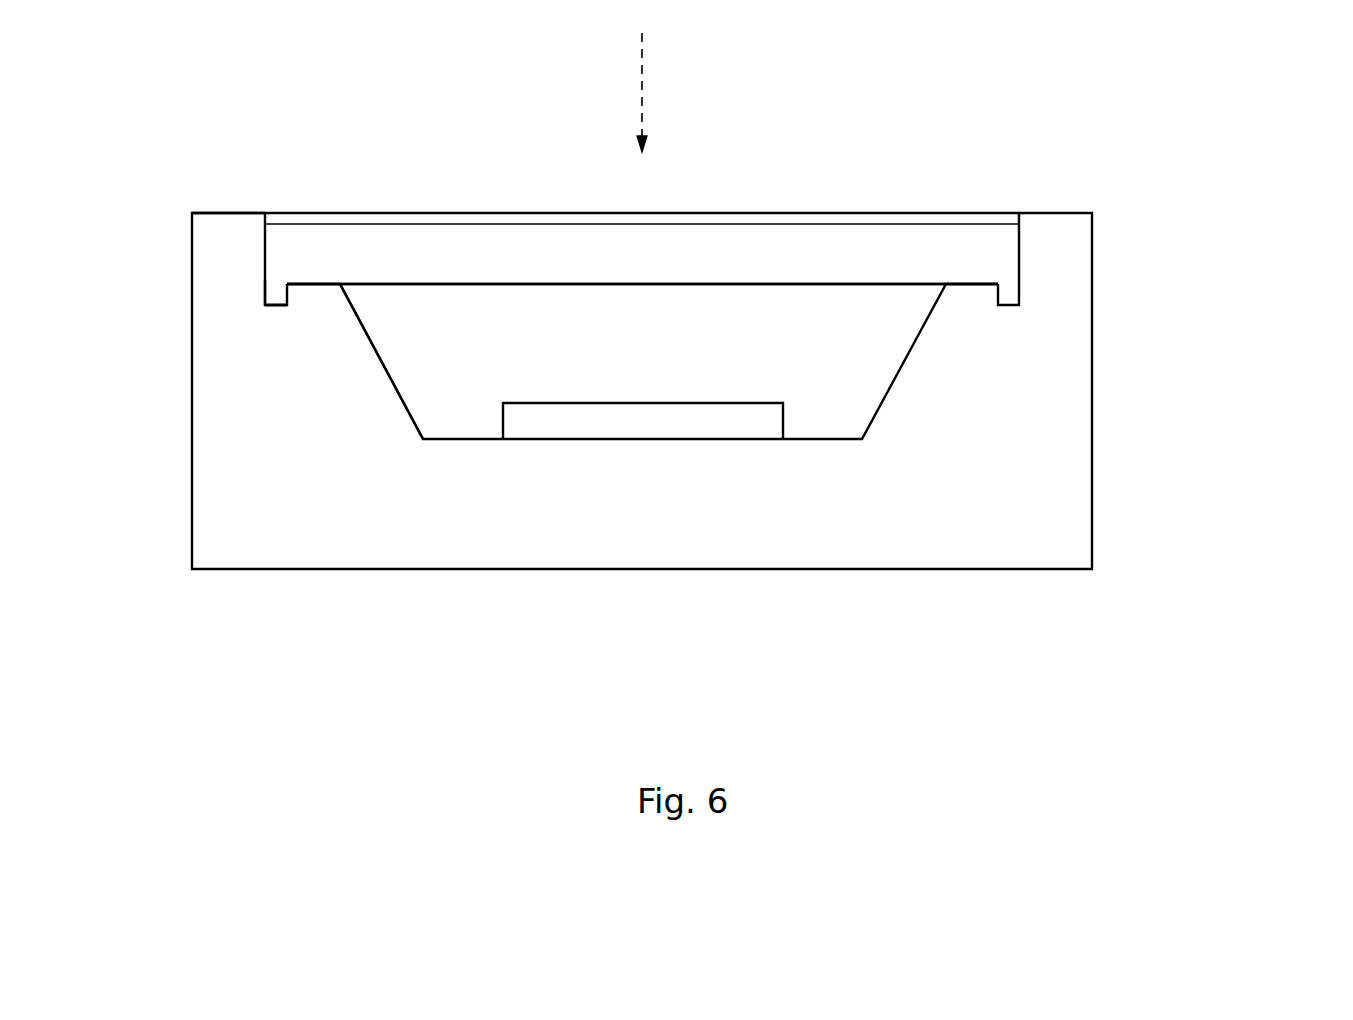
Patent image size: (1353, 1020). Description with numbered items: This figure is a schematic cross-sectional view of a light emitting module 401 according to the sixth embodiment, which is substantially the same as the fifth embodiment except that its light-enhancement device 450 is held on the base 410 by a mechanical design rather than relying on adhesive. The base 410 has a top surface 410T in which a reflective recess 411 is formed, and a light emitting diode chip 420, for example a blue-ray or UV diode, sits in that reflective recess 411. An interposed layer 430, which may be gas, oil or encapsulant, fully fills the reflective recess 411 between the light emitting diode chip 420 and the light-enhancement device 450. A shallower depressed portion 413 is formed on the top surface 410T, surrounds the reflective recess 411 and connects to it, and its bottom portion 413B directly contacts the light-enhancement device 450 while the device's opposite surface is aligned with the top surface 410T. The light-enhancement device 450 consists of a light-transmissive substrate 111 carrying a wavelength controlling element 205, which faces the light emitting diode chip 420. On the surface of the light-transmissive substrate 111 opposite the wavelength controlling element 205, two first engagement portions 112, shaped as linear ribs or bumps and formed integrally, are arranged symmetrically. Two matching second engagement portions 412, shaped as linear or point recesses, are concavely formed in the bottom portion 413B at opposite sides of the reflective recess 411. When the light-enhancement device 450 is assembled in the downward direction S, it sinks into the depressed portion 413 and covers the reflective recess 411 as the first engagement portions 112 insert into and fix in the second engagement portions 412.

The downward direction S is at (643, 60).
The light emitting module 401 is at (705, 324).
The base 410 is at (1052, 433).
The top surface 410T is at (217, 213).
The depressed portion 413 is at (265, 237).
The bottom portion 413B is at (305, 284).
The second engagement portions 412 is at (275, 306).
The reflective recess 411 is at (388, 373).
The first engagement portions 112 is at (275, 295).
The light-enhancement device 450 is at (754, 229).
The wavelength controlling element 205 is at (996, 219).
The light-transmissive substrate 111 is at (1003, 246).
The interposed layer 430 is at (643, 343).
The light emitting diode chip 420 is at (783, 421).